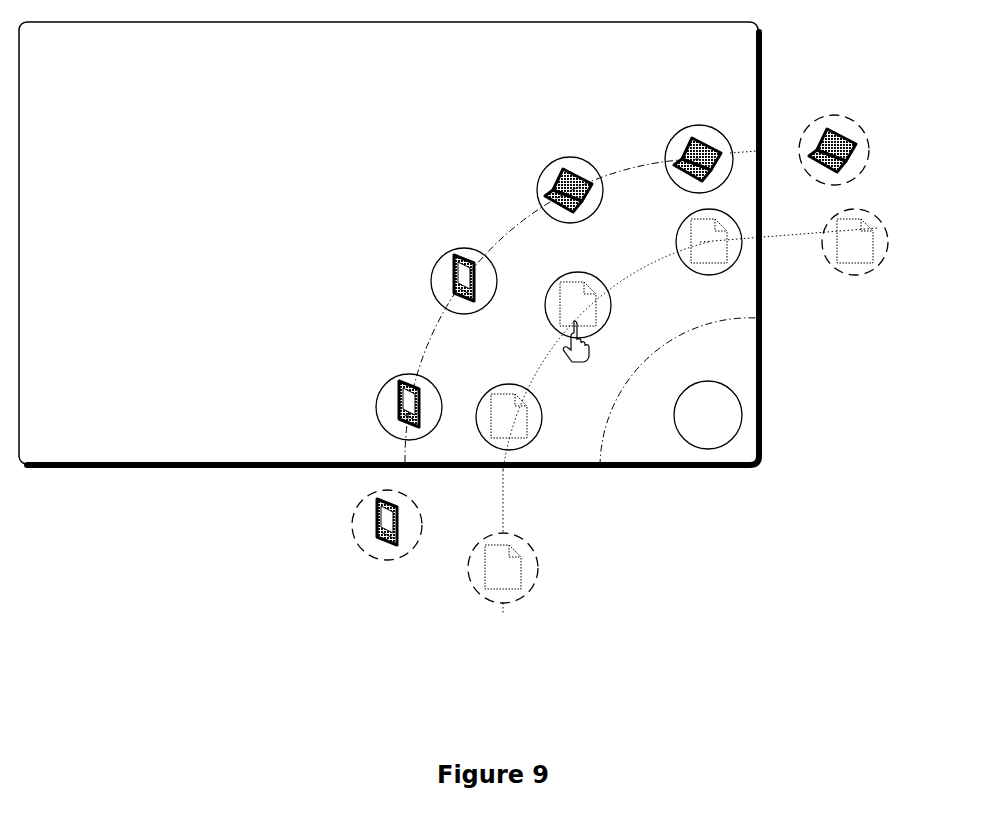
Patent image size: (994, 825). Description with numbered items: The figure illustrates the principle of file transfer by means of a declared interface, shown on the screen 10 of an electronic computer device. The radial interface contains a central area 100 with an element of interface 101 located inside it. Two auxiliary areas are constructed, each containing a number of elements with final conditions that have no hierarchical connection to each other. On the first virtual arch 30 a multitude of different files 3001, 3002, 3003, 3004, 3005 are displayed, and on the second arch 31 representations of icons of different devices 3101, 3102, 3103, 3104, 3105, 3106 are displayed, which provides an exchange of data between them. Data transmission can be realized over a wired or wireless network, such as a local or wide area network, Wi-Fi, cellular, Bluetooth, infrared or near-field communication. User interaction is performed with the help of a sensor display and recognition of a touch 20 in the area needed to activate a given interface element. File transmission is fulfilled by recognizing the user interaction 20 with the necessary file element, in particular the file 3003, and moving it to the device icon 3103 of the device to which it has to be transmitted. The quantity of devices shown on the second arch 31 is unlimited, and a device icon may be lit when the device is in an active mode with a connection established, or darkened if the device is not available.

The screen 10 is at (389, 243).
The central area 100 is at (678, 392).
The element of interface 101 is at (708, 415).
The touch 20 is at (592, 354).
The first virtual arch 30 is at (509, 488).
The second arch 31 is at (413, 340).
The file 3001 is at (537, 562).
The file 3002 is at (542, 413).
The file 3003 is at (612, 305).
The file 3004 is at (708, 274).
The file 3005 is at (882, 254).
The device 3101 is at (365, 508).
The device 3102 is at (384, 386).
The device icon 3103 is at (460, 249).
The device 3104 is at (549, 166).
The device 3105 is at (700, 124).
The device 3106 is at (851, 117).